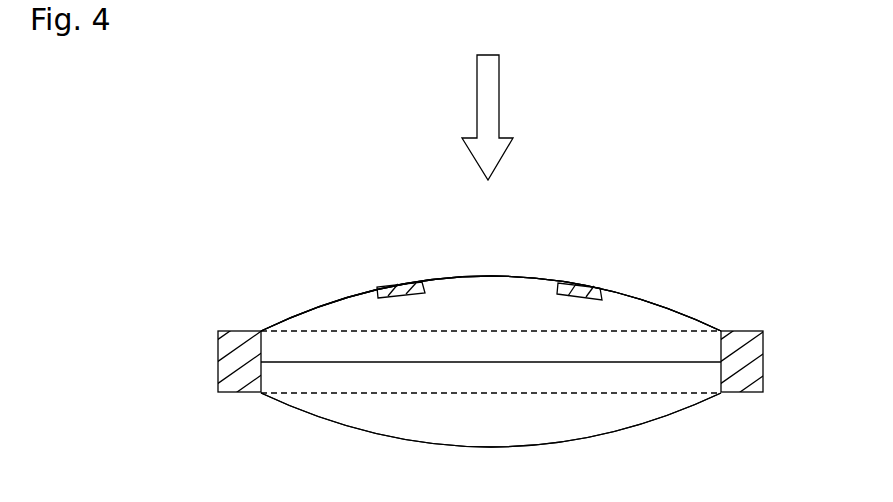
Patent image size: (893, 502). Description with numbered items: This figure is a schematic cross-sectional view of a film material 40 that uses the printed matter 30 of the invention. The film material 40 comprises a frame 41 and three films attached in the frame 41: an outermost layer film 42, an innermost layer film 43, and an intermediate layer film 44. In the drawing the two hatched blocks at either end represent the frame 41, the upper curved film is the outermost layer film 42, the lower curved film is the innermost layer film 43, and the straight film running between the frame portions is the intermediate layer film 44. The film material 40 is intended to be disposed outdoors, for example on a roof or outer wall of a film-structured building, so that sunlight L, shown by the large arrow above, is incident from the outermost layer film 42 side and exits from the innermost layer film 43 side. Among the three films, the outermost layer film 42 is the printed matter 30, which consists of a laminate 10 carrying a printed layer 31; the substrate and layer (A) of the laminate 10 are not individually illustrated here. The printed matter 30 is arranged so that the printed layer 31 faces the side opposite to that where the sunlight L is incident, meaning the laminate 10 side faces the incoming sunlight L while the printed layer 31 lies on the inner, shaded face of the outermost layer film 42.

The laminate 10 is at (490, 275).
The printed matter 30 is at (491, 260).
The printed layer 31 is at (395, 286).
The film material 40 is at (305, 234).
The frame 41 is at (243, 330).
The outermost layer film 42 is at (621, 293).
The innermost layer film 43 is at (670, 414).
The intermediate layer film 44 is at (318, 363).
The sunlight L is at (499, 103).